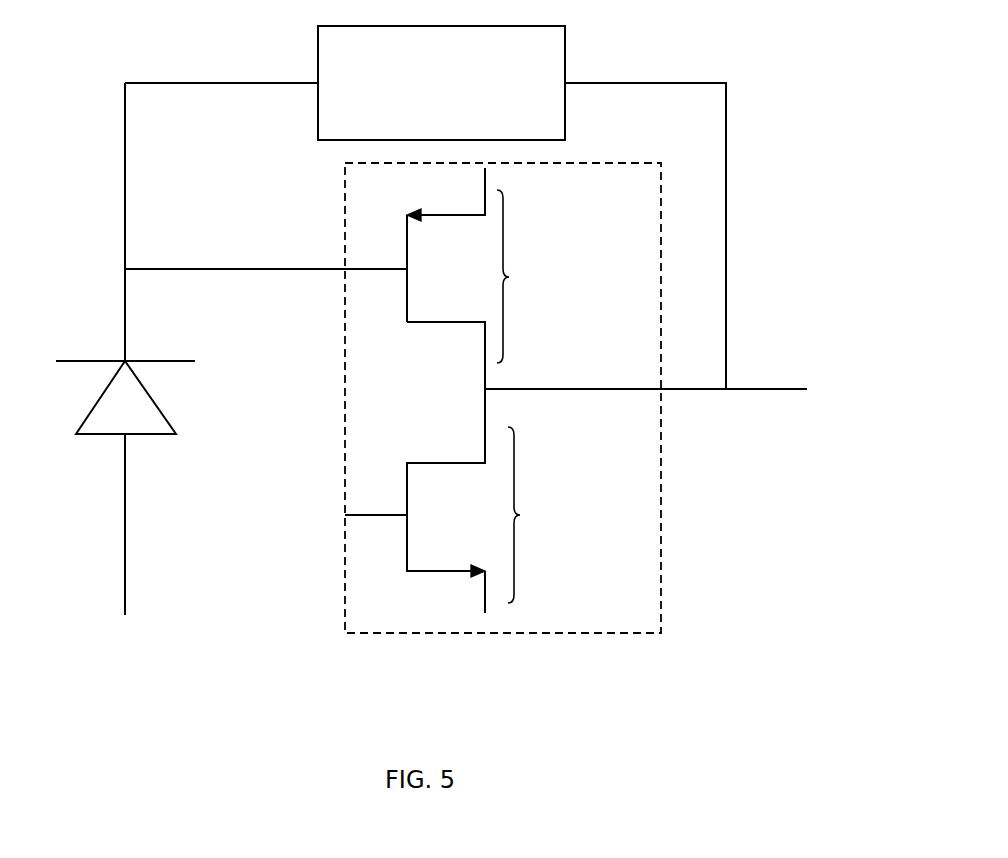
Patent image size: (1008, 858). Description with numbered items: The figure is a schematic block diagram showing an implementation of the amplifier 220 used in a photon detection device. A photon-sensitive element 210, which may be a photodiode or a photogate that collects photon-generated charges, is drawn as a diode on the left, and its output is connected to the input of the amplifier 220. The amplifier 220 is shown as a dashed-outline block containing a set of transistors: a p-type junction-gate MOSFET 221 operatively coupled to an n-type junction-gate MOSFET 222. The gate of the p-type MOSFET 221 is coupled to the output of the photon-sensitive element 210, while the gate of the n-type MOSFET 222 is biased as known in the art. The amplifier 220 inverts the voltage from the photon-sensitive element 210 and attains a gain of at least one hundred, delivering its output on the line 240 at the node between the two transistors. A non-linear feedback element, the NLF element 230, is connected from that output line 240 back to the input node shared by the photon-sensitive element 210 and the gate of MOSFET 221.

The photon-sensitive element 210 is at (164, 409).
The amplifier 220 is at (664, 484).
The p-type junction-gate MOSFET 221 is at (495, 278).
The n-type junction-gate MOSFET 222 is at (501, 501).
The NLF element 230 is at (316, 53).
The output 240 is at (657, 371).